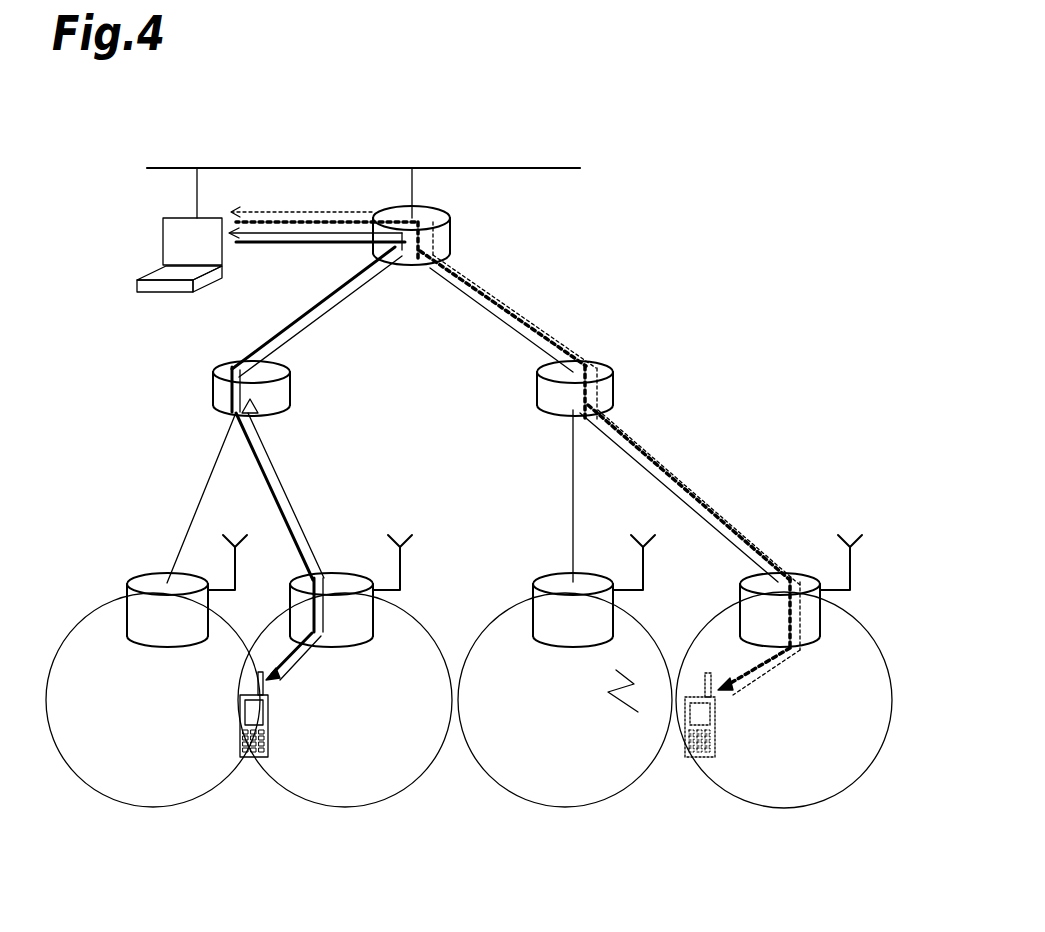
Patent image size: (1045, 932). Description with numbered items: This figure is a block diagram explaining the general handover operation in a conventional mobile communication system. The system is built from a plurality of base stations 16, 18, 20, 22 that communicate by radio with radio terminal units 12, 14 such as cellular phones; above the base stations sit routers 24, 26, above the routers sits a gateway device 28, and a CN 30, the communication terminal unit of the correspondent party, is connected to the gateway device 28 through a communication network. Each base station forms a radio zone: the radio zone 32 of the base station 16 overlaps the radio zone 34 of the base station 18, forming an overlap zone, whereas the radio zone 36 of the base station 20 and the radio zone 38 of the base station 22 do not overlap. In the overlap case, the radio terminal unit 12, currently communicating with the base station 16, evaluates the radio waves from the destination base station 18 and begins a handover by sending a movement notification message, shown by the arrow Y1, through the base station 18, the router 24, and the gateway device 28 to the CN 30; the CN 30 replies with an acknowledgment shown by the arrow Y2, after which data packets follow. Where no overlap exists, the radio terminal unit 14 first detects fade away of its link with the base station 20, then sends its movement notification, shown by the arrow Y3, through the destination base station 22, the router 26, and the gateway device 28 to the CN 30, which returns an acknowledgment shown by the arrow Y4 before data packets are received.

The radio terminal unit 12 is at (258, 757).
The radio terminal unit 14 is at (702, 757).
The base station 16 is at (128, 580).
The base station 18 is at (355, 576).
The base station 20 is at (545, 577).
The base station 22 is at (815, 577).
The router 24 is at (290, 388).
The router 26 is at (613, 390).
The gateway device 28 is at (452, 240).
The CN (Correspondent Node) 30 is at (163, 226).
The radio zone 32 is at (105, 797).
The radio zone 34 is at (397, 795).
The radio zone 36 is at (510, 798).
The radio zone 38 is at (837, 800).
The arrow Y1 is at (288, 500).
The arrow Y2 is at (305, 312).
The arrow Y3 is at (480, 290).
The arrow Y4 is at (525, 335).